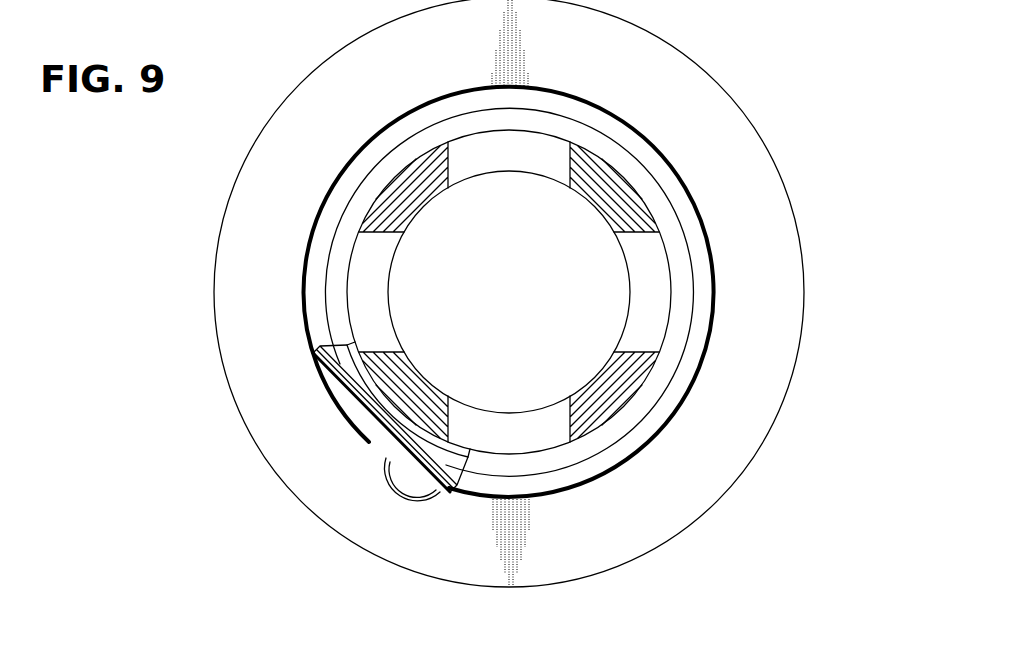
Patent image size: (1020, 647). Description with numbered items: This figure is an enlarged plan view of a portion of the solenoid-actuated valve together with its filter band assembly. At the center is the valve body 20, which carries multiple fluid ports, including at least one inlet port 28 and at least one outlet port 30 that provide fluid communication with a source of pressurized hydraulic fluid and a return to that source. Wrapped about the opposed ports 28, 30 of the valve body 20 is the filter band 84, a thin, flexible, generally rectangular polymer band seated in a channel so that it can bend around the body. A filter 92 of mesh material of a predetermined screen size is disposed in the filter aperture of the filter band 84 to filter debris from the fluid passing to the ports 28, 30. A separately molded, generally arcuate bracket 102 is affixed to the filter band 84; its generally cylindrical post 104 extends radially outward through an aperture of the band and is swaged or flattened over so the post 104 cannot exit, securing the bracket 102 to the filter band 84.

The valve body 20 is at (771, 189).
The inlet port 28 is at (457, 172).
The outlet port 30 is at (509, 292).
The filter band 84 is at (626, 118).
The filter 92 is at (672, 423).
The bracket 102 is at (313, 352).
The post 104 is at (408, 484).